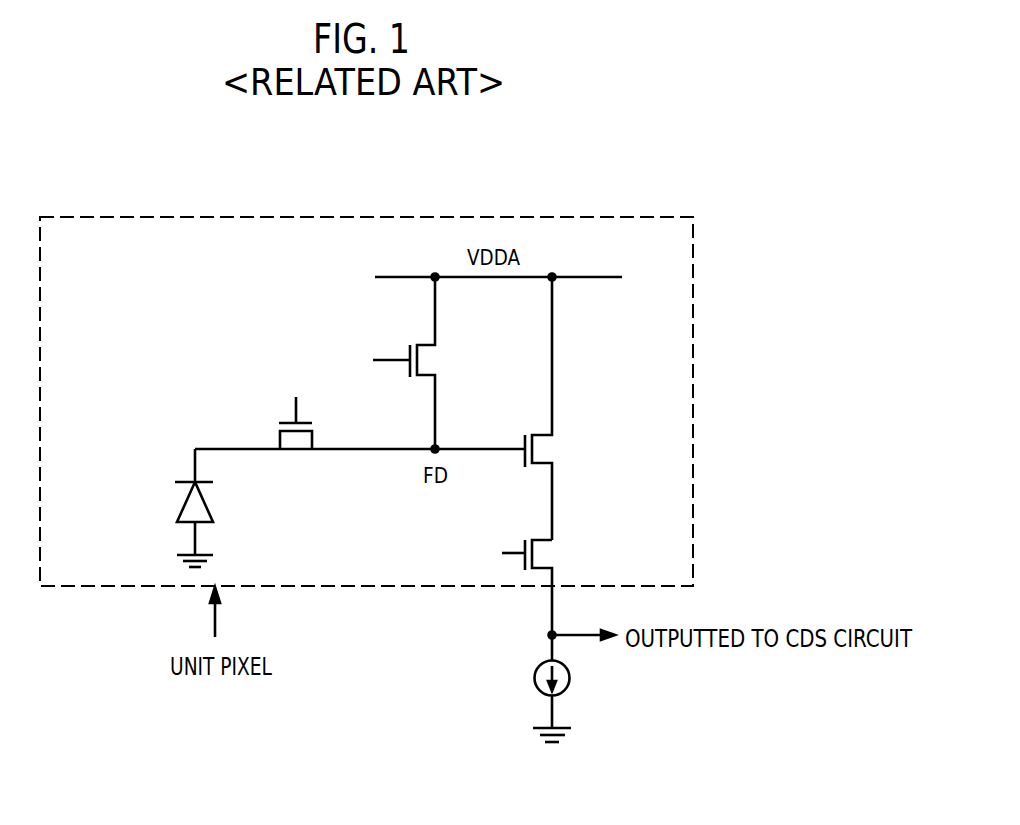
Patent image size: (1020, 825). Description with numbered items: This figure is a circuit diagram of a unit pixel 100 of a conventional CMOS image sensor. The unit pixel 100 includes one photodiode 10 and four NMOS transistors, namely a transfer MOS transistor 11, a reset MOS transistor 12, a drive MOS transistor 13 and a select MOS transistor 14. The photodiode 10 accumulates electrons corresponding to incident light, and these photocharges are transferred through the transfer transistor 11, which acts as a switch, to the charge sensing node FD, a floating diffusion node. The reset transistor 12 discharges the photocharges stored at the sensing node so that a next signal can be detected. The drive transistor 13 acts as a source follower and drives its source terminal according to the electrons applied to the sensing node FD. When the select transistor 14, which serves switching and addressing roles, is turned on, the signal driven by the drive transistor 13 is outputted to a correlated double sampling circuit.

The unit pixel 100 is at (622, 218).
The photodiode 10 is at (208, 512).
The transfer MOS transistor 11 is at (295, 453).
The reset MOS transistor 12 is at (432, 362).
The drive MOS transistor 13 is at (553, 450).
The select MOS transistor 14 is at (553, 555).